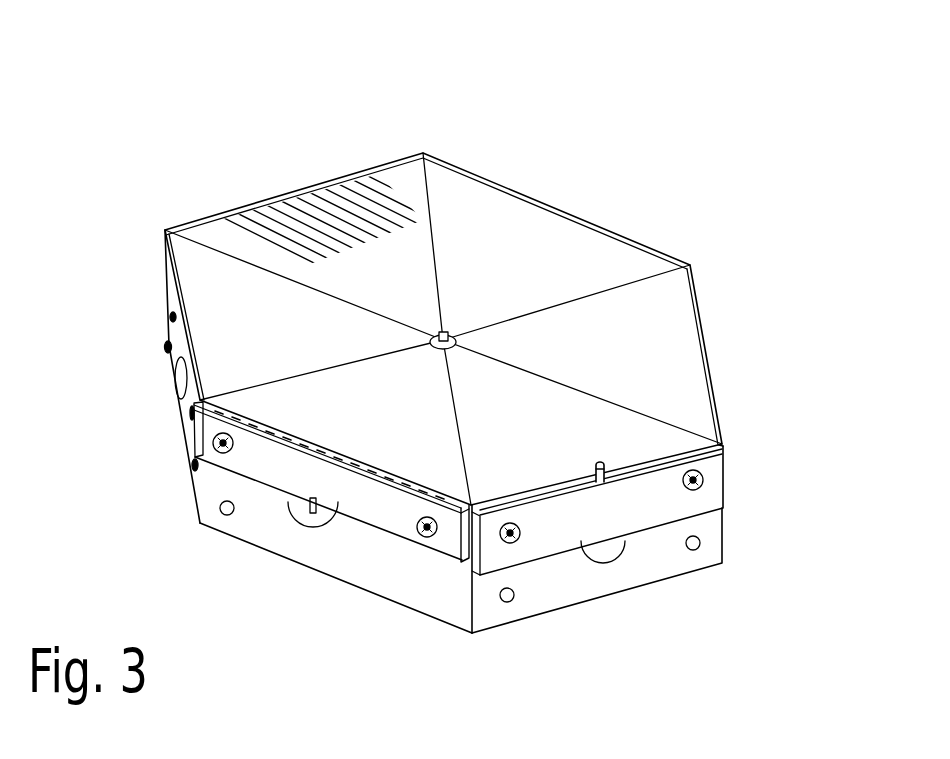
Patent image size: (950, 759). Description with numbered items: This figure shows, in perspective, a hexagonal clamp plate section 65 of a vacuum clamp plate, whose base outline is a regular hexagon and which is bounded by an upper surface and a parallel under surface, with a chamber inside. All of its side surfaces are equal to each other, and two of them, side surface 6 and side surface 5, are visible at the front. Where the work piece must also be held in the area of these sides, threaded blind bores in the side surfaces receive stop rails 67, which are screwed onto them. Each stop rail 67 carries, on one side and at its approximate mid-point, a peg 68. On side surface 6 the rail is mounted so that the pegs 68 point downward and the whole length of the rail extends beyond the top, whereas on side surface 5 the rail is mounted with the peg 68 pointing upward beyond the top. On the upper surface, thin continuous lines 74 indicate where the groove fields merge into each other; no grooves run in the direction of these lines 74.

The hexagonal clamp plate section 65 is at (557, 160).
The thin continuous lines 74 is at (515, 318).
The pegs 68 is at (597, 465).
The stop rails 67 is at (703, 500).
The side surface 6 is at (382, 570).
The side surface 5 is at (623, 573).